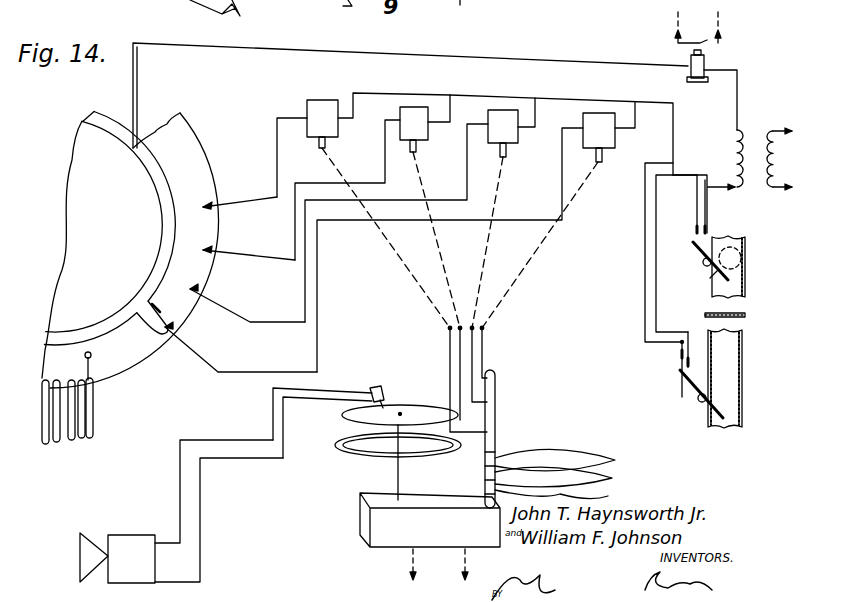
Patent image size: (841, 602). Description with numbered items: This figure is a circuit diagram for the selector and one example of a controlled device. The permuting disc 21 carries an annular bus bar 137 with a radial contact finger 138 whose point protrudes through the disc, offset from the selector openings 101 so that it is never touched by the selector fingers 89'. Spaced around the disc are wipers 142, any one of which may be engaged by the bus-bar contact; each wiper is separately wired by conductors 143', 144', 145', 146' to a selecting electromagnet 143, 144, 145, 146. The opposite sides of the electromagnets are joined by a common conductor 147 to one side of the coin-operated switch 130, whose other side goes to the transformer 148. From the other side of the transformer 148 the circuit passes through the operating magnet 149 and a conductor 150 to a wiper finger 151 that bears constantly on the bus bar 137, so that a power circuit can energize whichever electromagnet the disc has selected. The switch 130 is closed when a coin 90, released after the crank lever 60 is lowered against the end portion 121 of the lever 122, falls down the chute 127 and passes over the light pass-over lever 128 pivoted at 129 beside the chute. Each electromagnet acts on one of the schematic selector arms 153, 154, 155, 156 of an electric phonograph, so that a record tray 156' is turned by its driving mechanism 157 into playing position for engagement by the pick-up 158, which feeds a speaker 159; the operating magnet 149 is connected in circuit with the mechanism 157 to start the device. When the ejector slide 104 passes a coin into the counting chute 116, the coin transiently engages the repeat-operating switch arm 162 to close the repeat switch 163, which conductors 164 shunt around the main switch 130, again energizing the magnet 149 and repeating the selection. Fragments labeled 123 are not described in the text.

The permuting disc 21 is at (75, 178).
The annular bus bar 137 is at (160, 200).
The radial contact finger 138 is at (158, 318).
The wipers 142 is at (248, 257).
The electromagnet 143 is at (378, 204).
The electromagnet 144 is at (536, 201).
The electromagnet 145 is at (498, 203).
The electromagnet 146 is at (558, 206).
The conductor 143' is at (276, 157).
The conductor 144' is at (331, 190).
The conductor 145' is at (376, 223).
The conductor 146' is at (422, 252).
The common conductor 147 is at (676, 150).
The transformer 148 is at (757, 133).
The operating magnet 149 is at (705, 65).
The conductor 150 is at (503, 59).
The wiper finger 151 is at (137, 110).
The selector arm 153 is at (448, 335).
The selector arm 154 is at (458, 346).
The selector arm 155 is at (475, 336).
The selector arm 156 is at (547, 417).
The record tray 156' is at (396, 452).
The driving mechanism 157 is at (408, 528).
The pick-up 158 is at (332, 398).
The speaker 159 is at (132, 545).
The selector openings 101 is at (92, 355).
The selector fingers 89' is at (84, 411).
The switch 130 is at (695, 238).
The coin 90 is at (740, 240).
The chute 127 is at (735, 273).
The pass-over lever 128 is at (710, 280).
The pivot 129 is at (704, 266).
The ejector slide 104 is at (746, 316).
The counting chute 116 is at (735, 370).
The repeat-operating switch arm 162 is at (707, 410).
The repeat switch 163 is at (680, 356).
The conductors 164 is at (648, 290).
The lever 122 is at (130, 4).
The fragment of adjacent figure 123 is at (170, 10).
The end portion 121 is at (418, 8).
The crank lever 60 is at (459, 9).